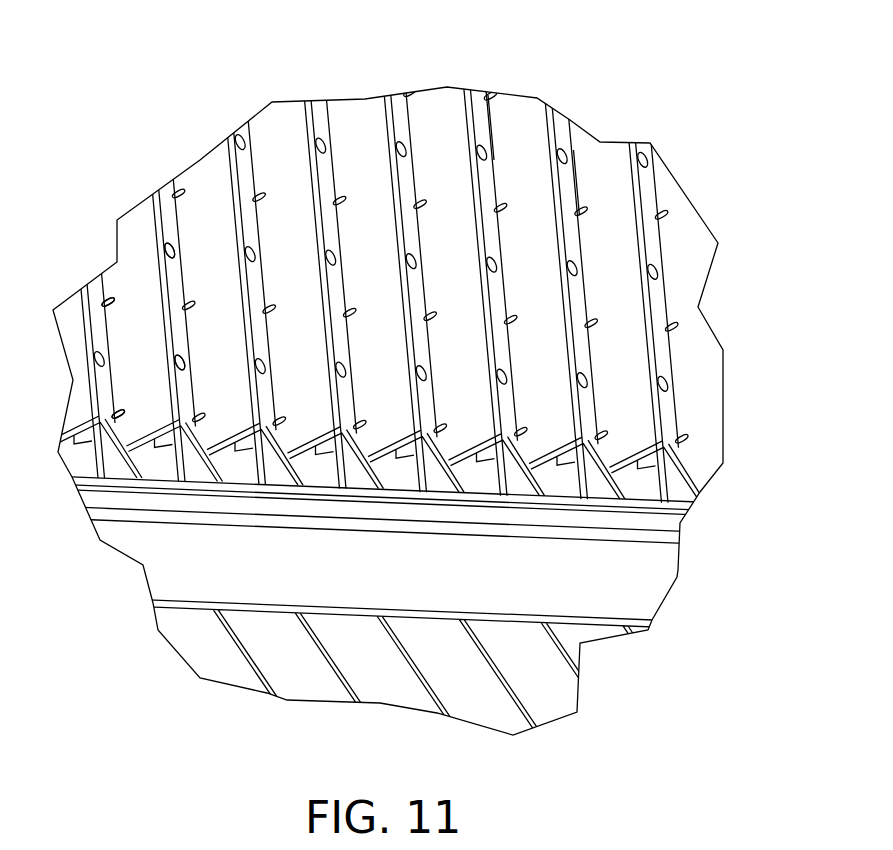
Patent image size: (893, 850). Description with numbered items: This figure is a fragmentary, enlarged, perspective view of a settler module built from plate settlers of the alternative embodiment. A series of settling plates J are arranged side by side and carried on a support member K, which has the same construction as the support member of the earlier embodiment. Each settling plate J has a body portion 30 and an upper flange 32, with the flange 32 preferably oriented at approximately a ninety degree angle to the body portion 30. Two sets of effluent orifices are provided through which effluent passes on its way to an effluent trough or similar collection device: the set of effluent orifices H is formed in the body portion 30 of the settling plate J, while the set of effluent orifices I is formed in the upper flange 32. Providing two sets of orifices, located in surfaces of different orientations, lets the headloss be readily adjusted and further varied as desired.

The upper flange 32 is at (253, 120).
The body portion 30 is at (334, 170).
The effluent orifices H is at (181, 361).
The effluent orifices I is at (119, 412).
The settling plate J is at (580, 168).
The support member K is at (700, 495).